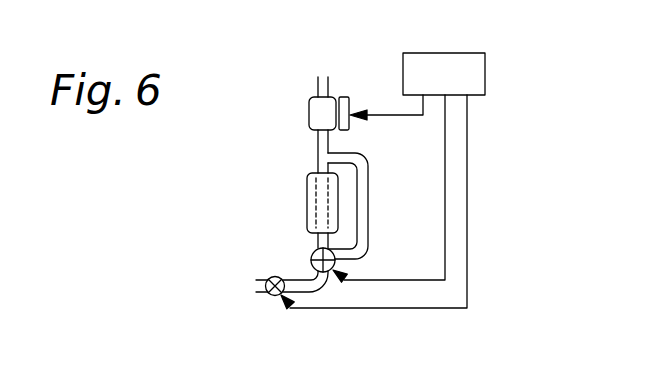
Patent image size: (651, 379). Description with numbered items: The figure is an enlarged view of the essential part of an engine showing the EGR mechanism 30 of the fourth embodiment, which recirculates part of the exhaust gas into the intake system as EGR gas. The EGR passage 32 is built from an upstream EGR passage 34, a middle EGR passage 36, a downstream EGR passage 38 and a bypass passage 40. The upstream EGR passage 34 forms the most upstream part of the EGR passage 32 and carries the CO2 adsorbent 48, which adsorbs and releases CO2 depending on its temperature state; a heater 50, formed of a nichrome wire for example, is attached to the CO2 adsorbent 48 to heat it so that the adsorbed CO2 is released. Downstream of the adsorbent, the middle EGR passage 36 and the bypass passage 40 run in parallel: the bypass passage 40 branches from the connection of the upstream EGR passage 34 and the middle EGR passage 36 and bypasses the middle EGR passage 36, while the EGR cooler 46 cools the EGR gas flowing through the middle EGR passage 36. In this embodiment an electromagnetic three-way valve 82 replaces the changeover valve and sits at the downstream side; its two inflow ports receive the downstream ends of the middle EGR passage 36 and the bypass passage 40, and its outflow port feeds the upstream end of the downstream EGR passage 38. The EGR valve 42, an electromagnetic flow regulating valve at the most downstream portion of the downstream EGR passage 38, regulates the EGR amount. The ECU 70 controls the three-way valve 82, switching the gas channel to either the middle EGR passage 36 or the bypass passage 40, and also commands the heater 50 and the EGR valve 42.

The EGR mechanism 30 is at (246, 151).
The EGR passage 32 is at (381, 160).
The upstream EGR passage 34 is at (318, 86).
The middle EGR passage 36 is at (315, 201).
The downstream EGR passage 38 is at (267, 279).
The bypass passage 40 is at (368, 227).
The EGR valve 42 is at (280, 294).
The EGR cooler 46 is at (307, 184).
The CO2 adsorbent 48 is at (309, 116).
The heater 50 is at (348, 97).
The ECU 70 is at (486, 75).
The three-way valve 82 is at (310, 255).